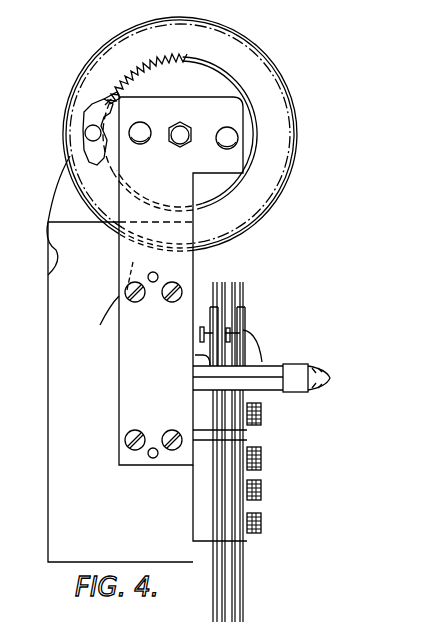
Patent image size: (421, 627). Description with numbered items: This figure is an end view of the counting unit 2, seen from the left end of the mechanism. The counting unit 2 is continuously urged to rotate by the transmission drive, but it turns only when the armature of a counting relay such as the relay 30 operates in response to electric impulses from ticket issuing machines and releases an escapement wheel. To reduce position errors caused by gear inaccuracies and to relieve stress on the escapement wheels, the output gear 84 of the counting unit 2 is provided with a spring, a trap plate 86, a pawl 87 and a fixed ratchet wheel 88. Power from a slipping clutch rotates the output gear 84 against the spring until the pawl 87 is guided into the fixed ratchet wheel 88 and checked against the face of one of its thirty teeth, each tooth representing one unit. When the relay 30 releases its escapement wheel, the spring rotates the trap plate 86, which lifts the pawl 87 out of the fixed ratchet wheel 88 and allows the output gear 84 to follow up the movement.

The counting unit 2 is at (48, 458).
The counting relay 30 is at (247, 441).
The output gear 84 is at (153, 22).
The trap plate 86 is at (102, 95).
The pawl 87 is at (84, 125).
The fixed ratchet wheel 88 is at (198, 68).